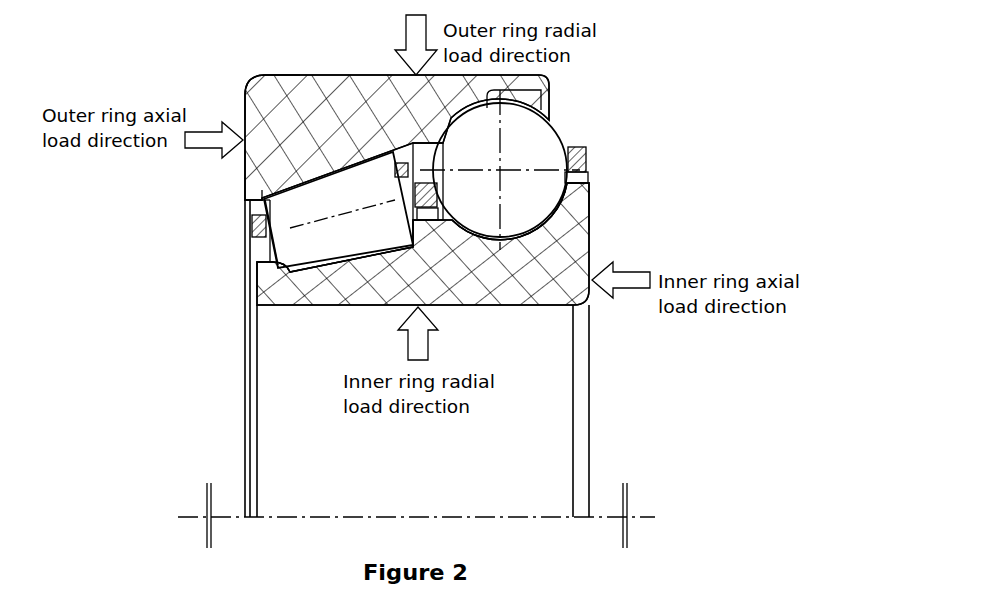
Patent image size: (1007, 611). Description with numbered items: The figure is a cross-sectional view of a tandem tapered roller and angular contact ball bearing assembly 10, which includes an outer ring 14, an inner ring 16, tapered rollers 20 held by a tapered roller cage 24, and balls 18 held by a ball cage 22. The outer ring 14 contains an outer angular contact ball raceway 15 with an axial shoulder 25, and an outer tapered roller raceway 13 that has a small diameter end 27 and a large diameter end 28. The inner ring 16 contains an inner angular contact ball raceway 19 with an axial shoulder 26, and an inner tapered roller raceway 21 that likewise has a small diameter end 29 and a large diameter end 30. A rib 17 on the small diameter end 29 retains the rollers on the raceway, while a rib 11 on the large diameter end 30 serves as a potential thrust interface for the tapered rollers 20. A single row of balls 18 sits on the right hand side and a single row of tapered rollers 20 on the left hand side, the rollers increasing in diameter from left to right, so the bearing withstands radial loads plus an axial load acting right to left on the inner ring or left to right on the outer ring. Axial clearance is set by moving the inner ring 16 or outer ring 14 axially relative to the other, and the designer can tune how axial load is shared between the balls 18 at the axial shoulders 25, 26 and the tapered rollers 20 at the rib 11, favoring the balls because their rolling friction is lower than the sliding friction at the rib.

The tandem tapered roller and angular contact ball bearing assembly 10 is at (612, 105).
The rib 11 is at (593, 287).
The outer tapered roller raceway 13 is at (322, 168).
The outer ring 14 is at (262, 102).
The outer angular contact ball raceway 15 is at (492, 100).
The inner ring 16 is at (463, 290).
The rib 17 is at (256, 262).
The balls 18 is at (535, 207).
The inner angular contact ball raceway 19 is at (555, 250).
The tapered rollers 20 is at (333, 242).
The inner tapered roller raceway 21 is at (395, 288).
The ball cage 22 is at (586, 152).
The tapered roller cage 24 is at (250, 228).
The axial shoulder 25 is at (430, 142).
The axial shoulder 26 is at (573, 192).
The small diameter end 27 is at (256, 176).
The large diameter end 28 is at (405, 172).
The small diameter end 29 is at (285, 276).
The large diameter end 30 is at (395, 285).